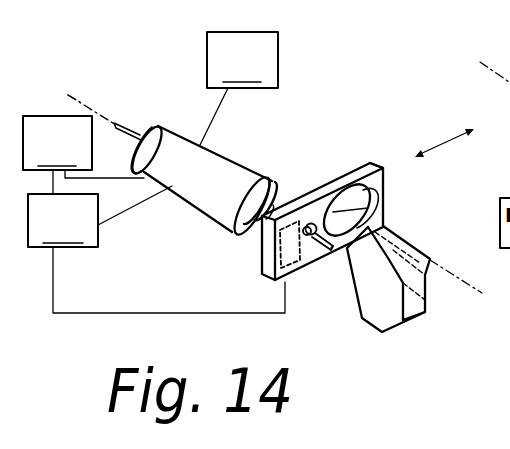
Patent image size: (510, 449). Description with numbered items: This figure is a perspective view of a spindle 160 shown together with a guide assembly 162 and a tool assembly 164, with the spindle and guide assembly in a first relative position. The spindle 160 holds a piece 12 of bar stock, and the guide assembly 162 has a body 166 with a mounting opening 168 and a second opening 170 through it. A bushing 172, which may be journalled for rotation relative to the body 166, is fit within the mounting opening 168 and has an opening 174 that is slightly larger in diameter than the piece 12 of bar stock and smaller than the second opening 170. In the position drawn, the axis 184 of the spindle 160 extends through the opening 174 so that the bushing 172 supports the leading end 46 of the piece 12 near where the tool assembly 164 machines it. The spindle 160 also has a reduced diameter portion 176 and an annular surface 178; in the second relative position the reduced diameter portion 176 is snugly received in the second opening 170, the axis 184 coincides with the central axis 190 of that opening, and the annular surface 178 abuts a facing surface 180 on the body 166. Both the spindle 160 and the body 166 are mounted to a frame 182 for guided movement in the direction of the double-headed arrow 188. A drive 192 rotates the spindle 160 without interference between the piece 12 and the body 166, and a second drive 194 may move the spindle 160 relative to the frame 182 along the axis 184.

The piece of bar stock 12 is at (130, 134).
The leading end 46 is at (348, 308).
The spindle 160 is at (205, 152).
The guide assembly 162 is at (393, 170).
The tool assembly 164 is at (432, 251).
The body 166 is at (366, 187).
The mounting opening 168 is at (333, 250).
The second opening 170 is at (368, 208).
The bushing 172 is at (305, 262).
The opening 174 is at (311, 223).
The reduced diameter portion 176 is at (263, 215).
The annular surface 178 is at (235, 222).
The facing surface 180 is at (364, 167).
The frame 182 is at (156, 249).
The axis 184 is at (78, 98).
The double-headed arrow 188 is at (432, 148).
The central axis 190 is at (462, 283).
The drive 192 is at (239, 88).
The second drive 194 is at (83, 155).